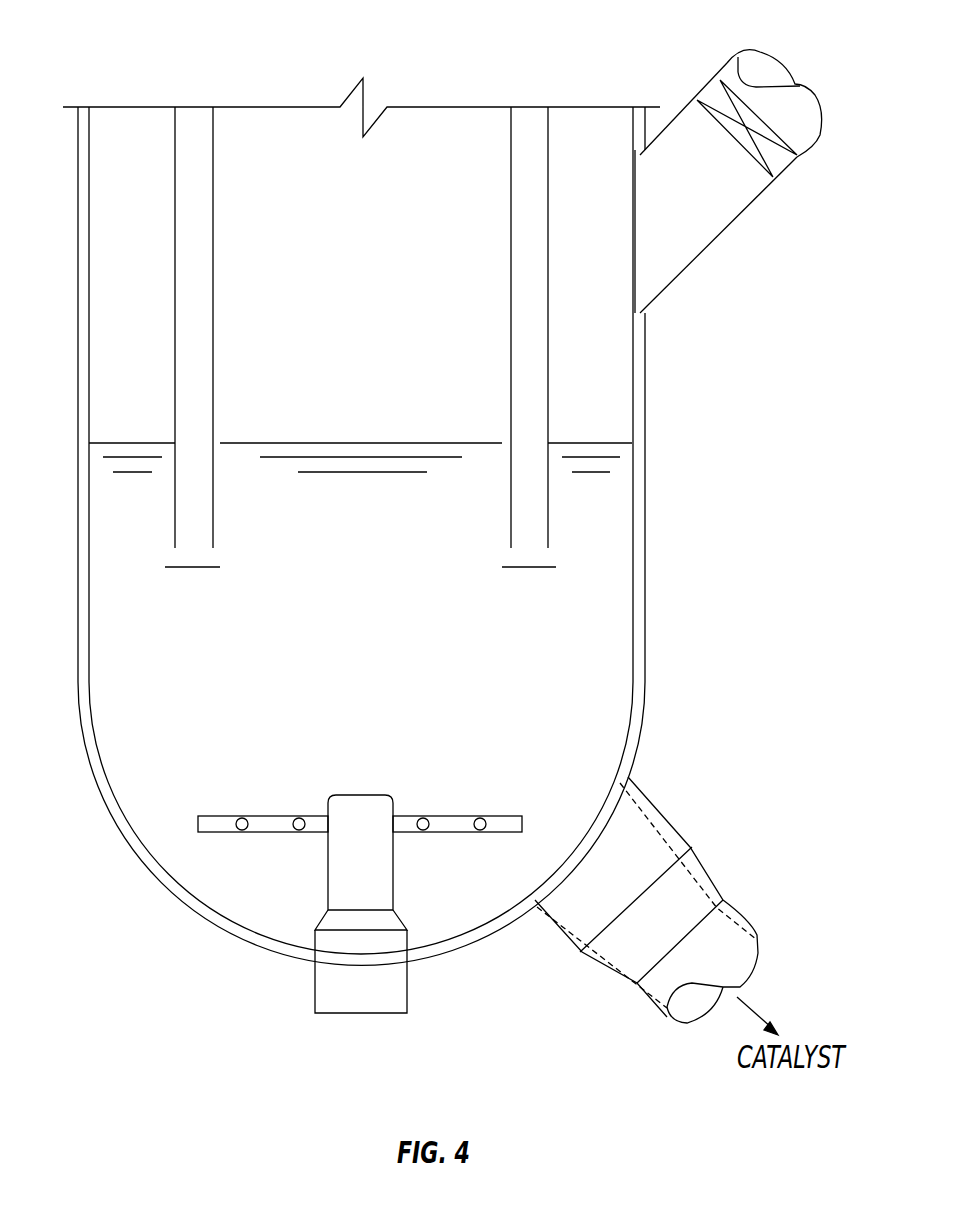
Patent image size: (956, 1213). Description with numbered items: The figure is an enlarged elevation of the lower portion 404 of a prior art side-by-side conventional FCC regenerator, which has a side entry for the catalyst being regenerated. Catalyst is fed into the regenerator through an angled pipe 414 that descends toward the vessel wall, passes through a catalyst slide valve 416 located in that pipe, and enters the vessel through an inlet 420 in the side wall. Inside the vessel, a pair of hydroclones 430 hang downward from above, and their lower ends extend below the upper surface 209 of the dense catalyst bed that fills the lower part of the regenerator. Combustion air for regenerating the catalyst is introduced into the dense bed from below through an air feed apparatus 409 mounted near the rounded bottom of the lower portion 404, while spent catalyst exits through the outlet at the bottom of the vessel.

The lower portion 404 is at (645, 560).
The upper surface 209 is at (100, 448).
The hydroclones 430 is at (183, 518).
The angled pipe 414 is at (725, 65).
The catalyst slide valve 416 is at (787, 170).
The inlet 420 is at (640, 257).
The air feed apparatus 409 is at (328, 887).